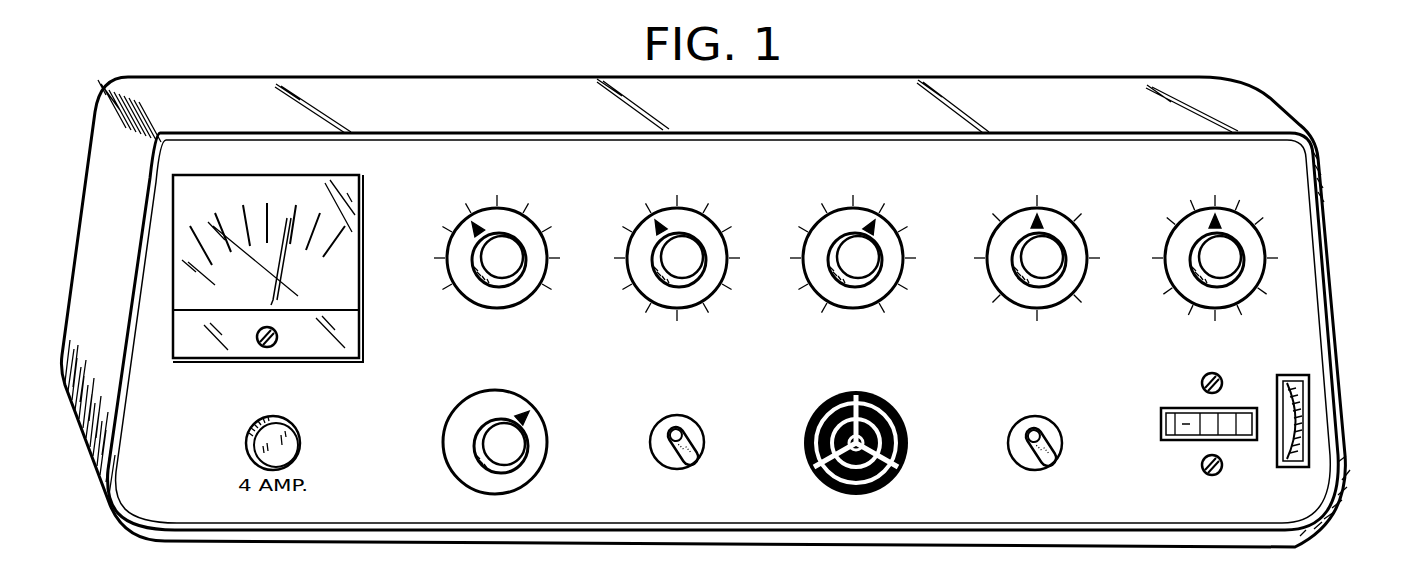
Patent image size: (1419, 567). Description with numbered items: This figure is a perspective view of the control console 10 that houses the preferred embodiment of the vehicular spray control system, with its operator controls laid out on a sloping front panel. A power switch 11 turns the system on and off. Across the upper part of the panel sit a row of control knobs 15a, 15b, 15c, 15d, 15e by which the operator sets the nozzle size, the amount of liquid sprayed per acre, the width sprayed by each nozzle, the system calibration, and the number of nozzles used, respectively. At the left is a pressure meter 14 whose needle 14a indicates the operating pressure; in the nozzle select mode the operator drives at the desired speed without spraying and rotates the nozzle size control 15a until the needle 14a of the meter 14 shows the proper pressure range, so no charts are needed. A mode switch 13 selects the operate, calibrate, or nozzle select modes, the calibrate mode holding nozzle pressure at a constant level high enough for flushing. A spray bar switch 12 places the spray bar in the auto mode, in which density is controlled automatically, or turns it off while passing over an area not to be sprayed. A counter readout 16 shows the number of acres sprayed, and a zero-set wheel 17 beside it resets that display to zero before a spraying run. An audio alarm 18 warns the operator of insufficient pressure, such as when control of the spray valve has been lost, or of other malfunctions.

The control panel housing 10 is at (1242, 120).
The power switch 11 is at (1053, 458).
The spray bar switch 12 is at (692, 432).
The mode switch 13 is at (538, 436).
The meter 14 is at (338, 328).
The needle 14a is at (284, 263).
The nozzle size control knob 15a is at (500, 263).
The amount control knob 15b is at (684, 264).
The width per nozzle control knob 15c is at (860, 264).
The calibration control knob 15d is at (1045, 266).
The number of nozzles control knob 15e is at (1226, 267).
The readout 16 is at (1176, 408).
The zero-set wheel 17 is at (1310, 412).
The audio alarm 18 is at (908, 448).